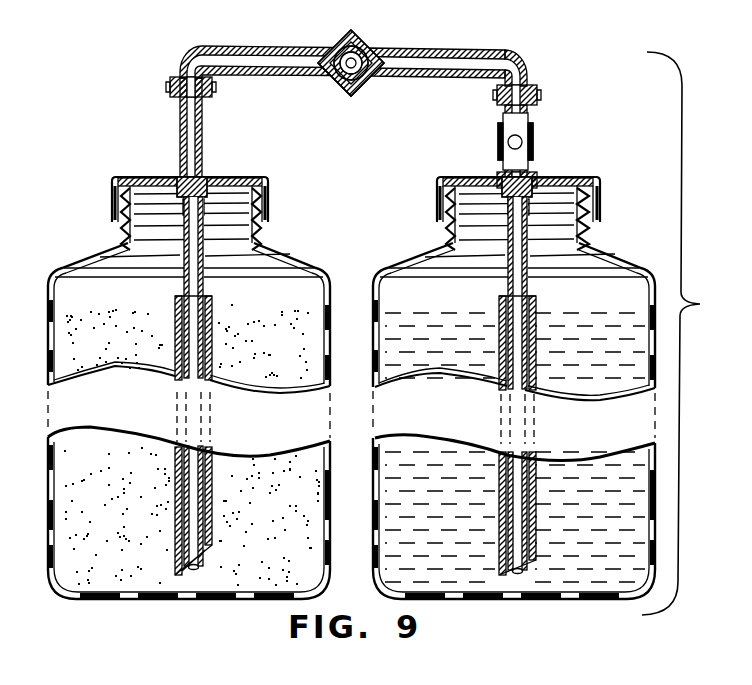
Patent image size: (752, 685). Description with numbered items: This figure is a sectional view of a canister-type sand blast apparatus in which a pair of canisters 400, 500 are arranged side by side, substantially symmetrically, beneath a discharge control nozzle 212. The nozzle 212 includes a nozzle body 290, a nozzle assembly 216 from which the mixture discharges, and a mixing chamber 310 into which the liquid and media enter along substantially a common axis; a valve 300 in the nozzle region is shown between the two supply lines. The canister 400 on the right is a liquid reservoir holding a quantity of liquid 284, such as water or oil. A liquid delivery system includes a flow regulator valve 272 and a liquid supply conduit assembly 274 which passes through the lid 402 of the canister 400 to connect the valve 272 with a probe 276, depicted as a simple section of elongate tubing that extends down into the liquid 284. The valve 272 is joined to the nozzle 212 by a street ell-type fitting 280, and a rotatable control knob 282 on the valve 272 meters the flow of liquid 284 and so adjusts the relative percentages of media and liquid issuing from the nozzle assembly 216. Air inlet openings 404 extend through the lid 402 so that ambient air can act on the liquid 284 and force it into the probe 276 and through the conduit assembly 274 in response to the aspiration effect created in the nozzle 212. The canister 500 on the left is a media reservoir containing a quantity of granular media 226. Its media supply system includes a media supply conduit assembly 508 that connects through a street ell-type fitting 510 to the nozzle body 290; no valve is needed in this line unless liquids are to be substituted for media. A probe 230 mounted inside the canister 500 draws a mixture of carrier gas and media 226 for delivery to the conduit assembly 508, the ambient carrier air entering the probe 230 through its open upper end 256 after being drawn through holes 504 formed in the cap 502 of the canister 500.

The discharge control nozzle 212 is at (326, 36).
The valve 300 is at (330, 79).
The mixing chamber 310 is at (336, 80).
The nozzle assembly 216 is at (369, 108).
The nozzle body 290 is at (384, 43).
The street ell-type fitting 280 is at (522, 64).
The street ell-type fitting 510 is at (216, 50).
The media supply conduit assembly 508 is at (186, 135).
The canister 500 is at (220, 179).
The cap 502 is at (270, 190).
The holes 504 is at (172, 178).
The probe 230 is at (178, 282).
The open upper end 256 is at (208, 300).
The media 226 is at (259, 326).
The rotatable control knob 282 is at (499, 135).
The flow regulator valve 272 is at (529, 131).
The liquid supply conduit assembly 274 is at (482, 356).
The air inlet openings 404 is at (510, 172).
The canister 400 is at (541, 180).
The lid 402 is at (546, 193).
The probe 276 is at (545, 423).
The liquid 284 is at (515, 437).